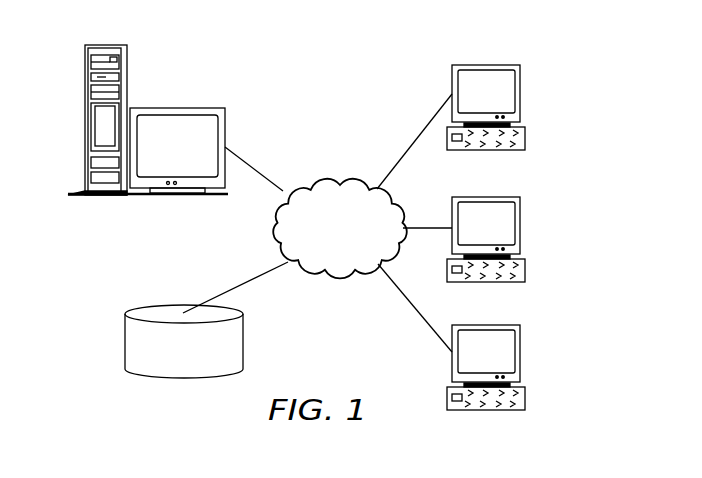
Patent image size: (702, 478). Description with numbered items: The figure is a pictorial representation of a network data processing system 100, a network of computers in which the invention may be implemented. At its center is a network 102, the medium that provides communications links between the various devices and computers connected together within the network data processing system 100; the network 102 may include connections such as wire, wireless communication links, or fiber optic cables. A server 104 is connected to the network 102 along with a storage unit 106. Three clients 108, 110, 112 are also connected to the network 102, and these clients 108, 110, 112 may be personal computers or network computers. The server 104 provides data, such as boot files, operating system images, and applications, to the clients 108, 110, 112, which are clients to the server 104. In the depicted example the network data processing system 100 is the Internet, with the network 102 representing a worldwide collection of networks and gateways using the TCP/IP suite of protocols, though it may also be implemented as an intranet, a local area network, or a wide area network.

The network data processing system 100 is at (368, 72).
The network 102 is at (312, 180).
The server 104 is at (178, 108).
The storage unit 106 is at (125, 343).
The client 108 is at (521, 94).
The client 110 is at (521, 226).
The client 112 is at (522, 355).